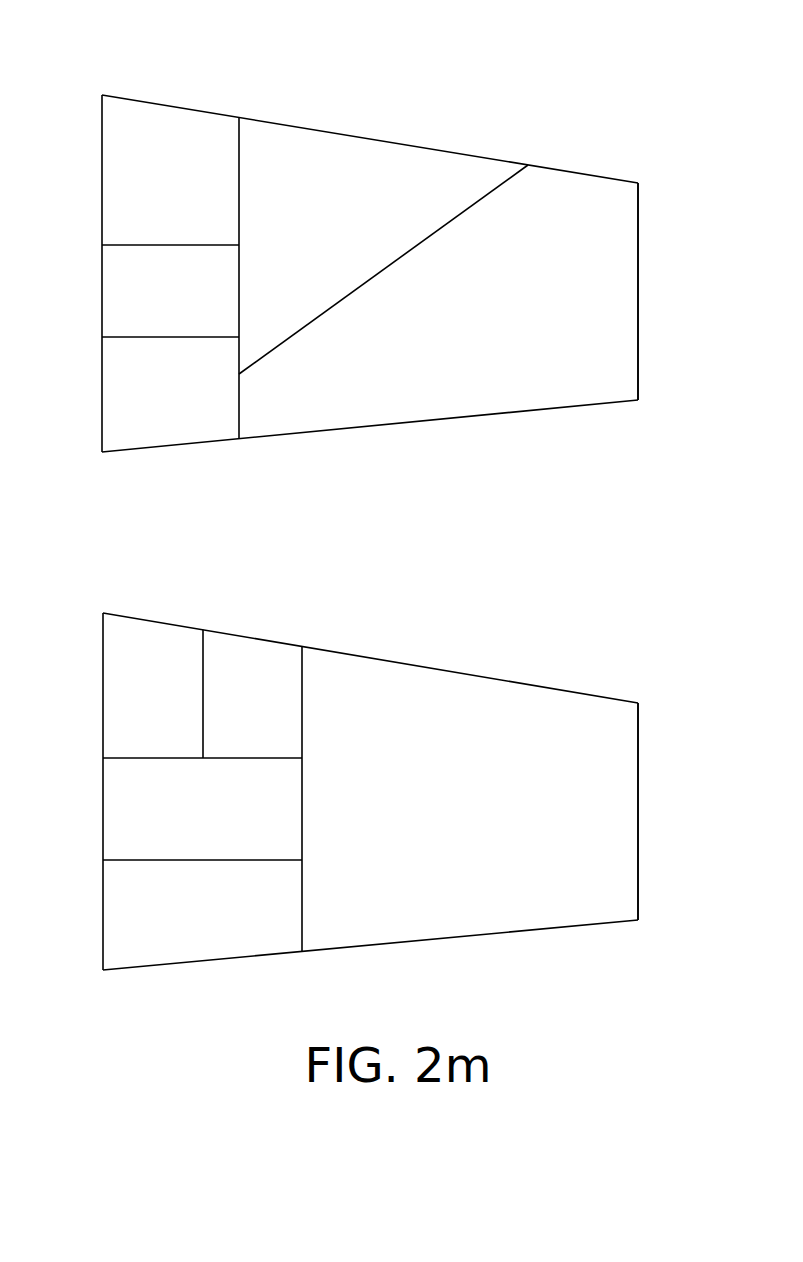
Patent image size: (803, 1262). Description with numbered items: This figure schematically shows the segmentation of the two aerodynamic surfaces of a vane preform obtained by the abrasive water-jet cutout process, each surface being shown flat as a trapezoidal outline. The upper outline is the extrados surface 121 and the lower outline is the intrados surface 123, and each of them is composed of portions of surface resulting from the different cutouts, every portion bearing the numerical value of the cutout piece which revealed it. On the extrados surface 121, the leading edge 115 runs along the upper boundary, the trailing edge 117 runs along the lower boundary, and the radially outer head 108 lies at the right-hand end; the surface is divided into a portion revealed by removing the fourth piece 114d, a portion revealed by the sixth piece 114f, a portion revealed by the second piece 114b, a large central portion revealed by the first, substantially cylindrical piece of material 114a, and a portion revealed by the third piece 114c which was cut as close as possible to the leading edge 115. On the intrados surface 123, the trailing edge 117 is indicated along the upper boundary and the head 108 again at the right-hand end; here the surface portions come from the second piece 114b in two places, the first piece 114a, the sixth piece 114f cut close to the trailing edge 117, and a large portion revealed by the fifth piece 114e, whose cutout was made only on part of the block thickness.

The head 108 is at (597, 207).
The leading edge 115 is at (181, 106).
The trailing edge 117 is at (190, 445).
The extrados surface 121 is at (555, 102).
The intrados surface 123 is at (547, 633).
The first piece of material 114a is at (282, 228).
The second piece 114b is at (146, 404).
The third piece 114c is at (435, 346).
The fourth piece 114d is at (144, 195).
The fifth piece 114e is at (437, 819).
The sixth piece 114f is at (148, 304).